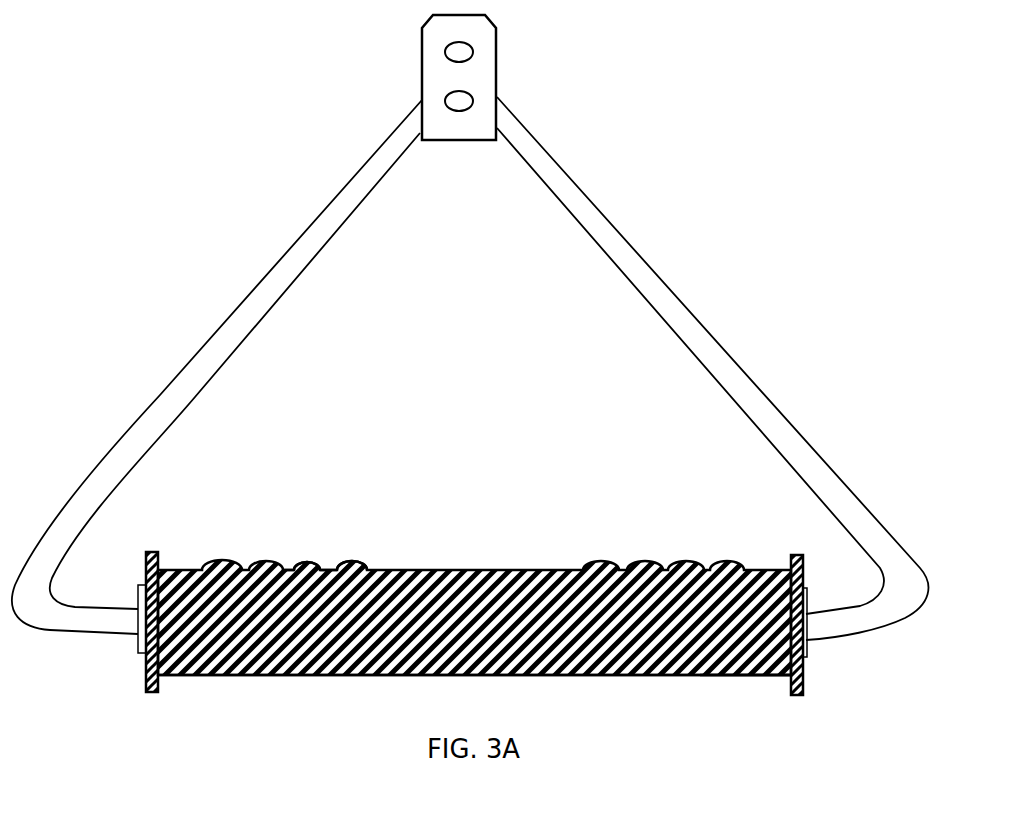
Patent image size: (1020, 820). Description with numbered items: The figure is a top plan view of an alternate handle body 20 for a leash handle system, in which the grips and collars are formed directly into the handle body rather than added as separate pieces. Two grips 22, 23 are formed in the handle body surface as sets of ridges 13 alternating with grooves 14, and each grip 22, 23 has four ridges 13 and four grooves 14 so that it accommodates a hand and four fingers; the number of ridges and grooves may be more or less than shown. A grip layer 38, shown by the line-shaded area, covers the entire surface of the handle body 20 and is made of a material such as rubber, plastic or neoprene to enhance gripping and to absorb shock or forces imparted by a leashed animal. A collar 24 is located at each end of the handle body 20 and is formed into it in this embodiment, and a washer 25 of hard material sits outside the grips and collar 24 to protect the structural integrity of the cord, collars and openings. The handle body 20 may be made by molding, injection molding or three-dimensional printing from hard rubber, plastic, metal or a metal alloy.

The ridges 13 is at (307, 560).
The grooves 14 is at (288, 565).
The handle body 20 is at (476, 622).
The grip 22 is at (283, 600).
The grip 23 is at (667, 593).
The collar 24 is at (150, 678).
The washer 25 is at (810, 658).
The grip layer 38 is at (740, 668).